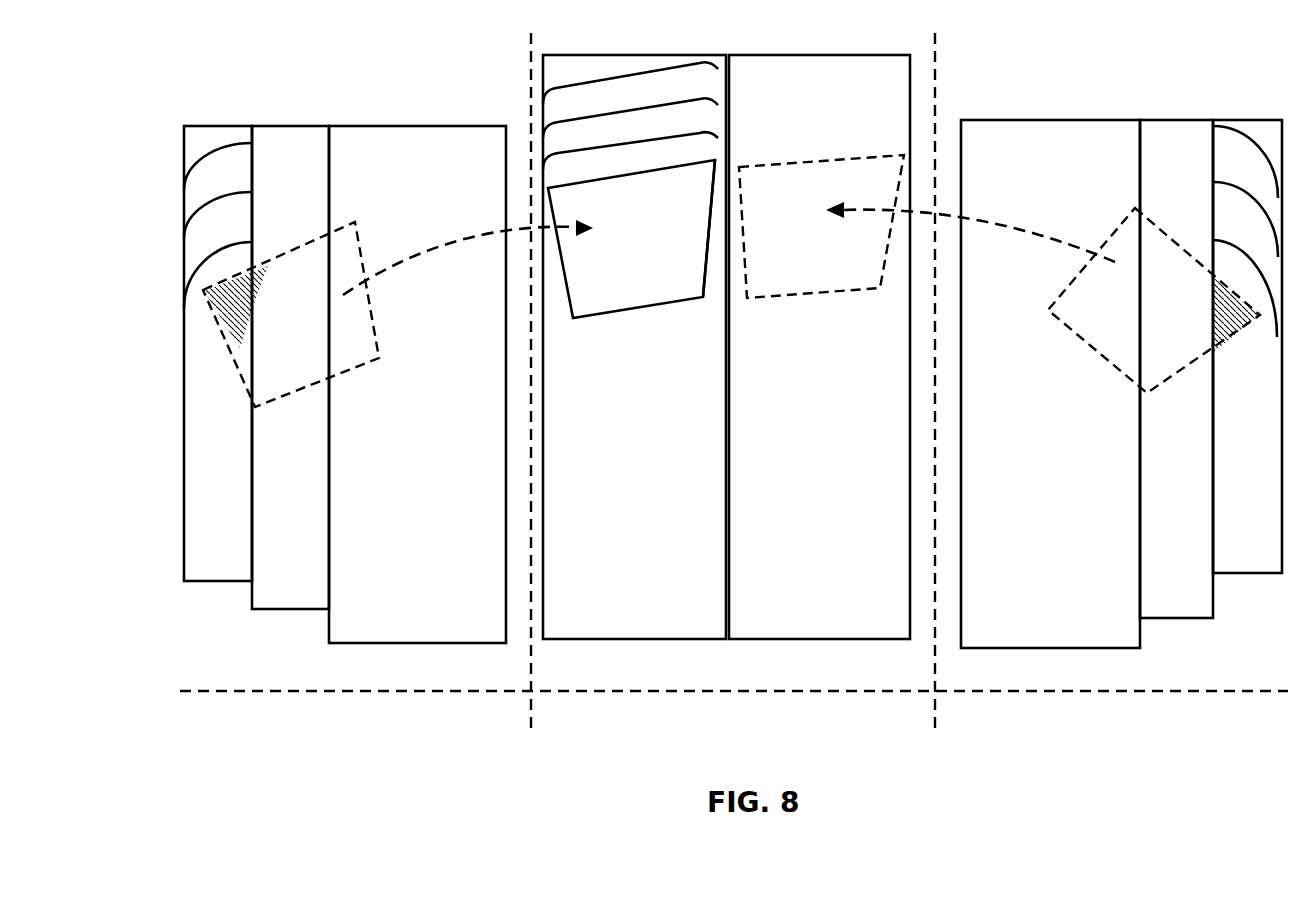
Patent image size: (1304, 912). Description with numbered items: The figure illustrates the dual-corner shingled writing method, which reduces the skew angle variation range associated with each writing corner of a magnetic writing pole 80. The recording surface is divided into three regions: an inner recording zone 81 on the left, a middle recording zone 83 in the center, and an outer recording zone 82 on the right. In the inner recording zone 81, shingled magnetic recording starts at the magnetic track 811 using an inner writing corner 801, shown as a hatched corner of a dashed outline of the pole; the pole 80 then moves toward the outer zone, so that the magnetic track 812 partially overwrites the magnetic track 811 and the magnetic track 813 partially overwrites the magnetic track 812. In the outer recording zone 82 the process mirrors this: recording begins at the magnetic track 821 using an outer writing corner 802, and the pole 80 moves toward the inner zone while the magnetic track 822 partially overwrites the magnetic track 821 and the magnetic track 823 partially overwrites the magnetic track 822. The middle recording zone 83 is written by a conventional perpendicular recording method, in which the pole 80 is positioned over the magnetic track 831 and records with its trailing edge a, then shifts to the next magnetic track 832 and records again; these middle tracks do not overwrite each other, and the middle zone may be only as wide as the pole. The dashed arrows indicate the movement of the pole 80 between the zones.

The magnetic writing pole 80 is at (654, 311).
The edge of the magnetic writing pole a is at (688, 159).
The inner recording zone 81 is at (345, 432).
The magnetic track 811 is at (218, 353).
The magnetic track 812 is at (290, 367).
The magnetic track 813 is at (417, 385).
The inner writing corner 801 is at (240, 310).
The middle recording zone 83 is at (726, 394).
The magnetic track 831 is at (634, 347).
The magnetic track 832 is at (819, 347).
The outer recording zone 82 is at (1117, 431).
The magnetic track 821 is at (1247, 346).
The magnetic track 822 is at (1176, 369).
The magnetic track 823 is at (1050, 384).
The outer writing corner 802 is at (1222, 316).